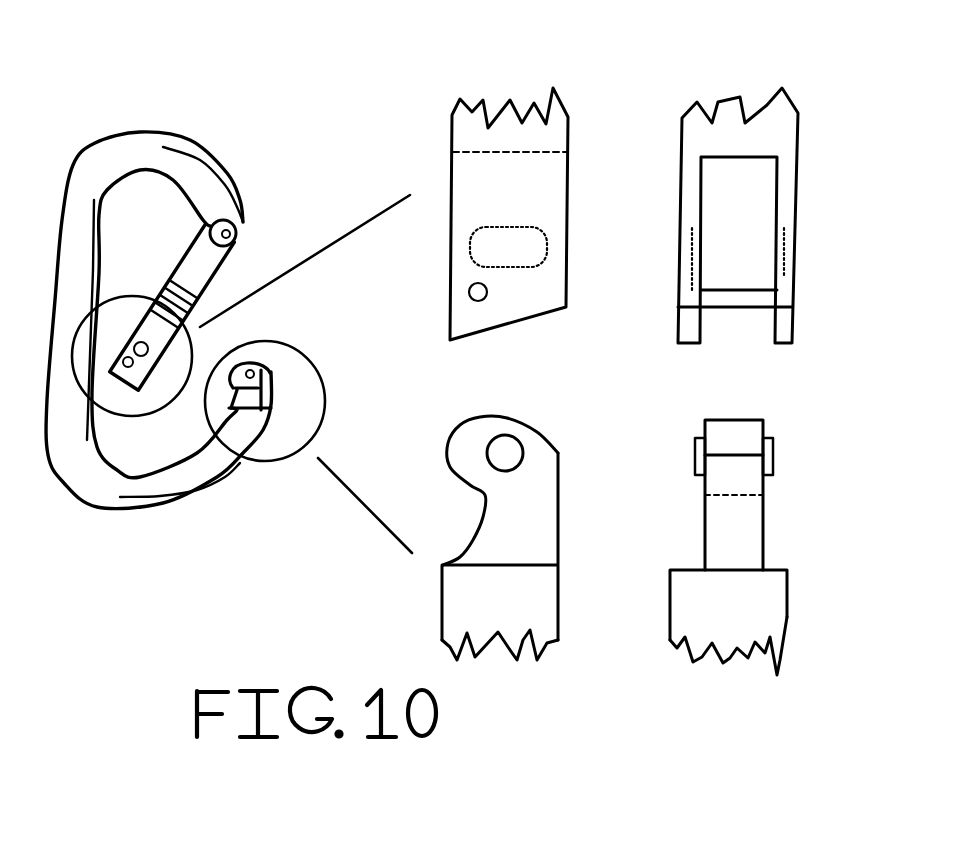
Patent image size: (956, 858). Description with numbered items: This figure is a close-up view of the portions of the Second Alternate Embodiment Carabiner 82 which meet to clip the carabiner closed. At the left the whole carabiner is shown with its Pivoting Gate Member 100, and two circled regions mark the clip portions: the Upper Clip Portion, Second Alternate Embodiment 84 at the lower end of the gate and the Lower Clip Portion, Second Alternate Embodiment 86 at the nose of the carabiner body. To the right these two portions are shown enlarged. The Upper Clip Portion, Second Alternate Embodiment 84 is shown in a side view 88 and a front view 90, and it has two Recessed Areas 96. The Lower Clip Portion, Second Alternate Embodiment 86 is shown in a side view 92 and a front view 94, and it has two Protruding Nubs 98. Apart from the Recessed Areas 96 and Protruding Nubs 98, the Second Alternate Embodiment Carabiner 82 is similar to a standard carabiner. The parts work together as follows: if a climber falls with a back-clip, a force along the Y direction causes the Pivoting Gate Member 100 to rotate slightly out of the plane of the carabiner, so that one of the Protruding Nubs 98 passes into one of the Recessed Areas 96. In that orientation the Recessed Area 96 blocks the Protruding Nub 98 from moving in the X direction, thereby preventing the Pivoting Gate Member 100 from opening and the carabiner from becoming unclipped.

The Second Alternate Embodiment Carabiner 82 is at (159, 276).
The Upper Clip Portion, Second Alternate Embodiment 84 is at (371, 216).
The Lower Clip Portion, Second Alternate Embodiment 86 is at (428, 447).
The side view of upper clip portion 88 is at (471, 214).
The front view of upper clip portion 90 is at (786, 213).
The side view of lower clip portion 92 is at (466, 536).
The front view of lower clip portion 94 is at (790, 544).
The Recessed Areas 96 is at (768, 247).
The Protruding Nubs 98 is at (765, 467).
The Pivoting Gate Member 100 is at (248, 218).